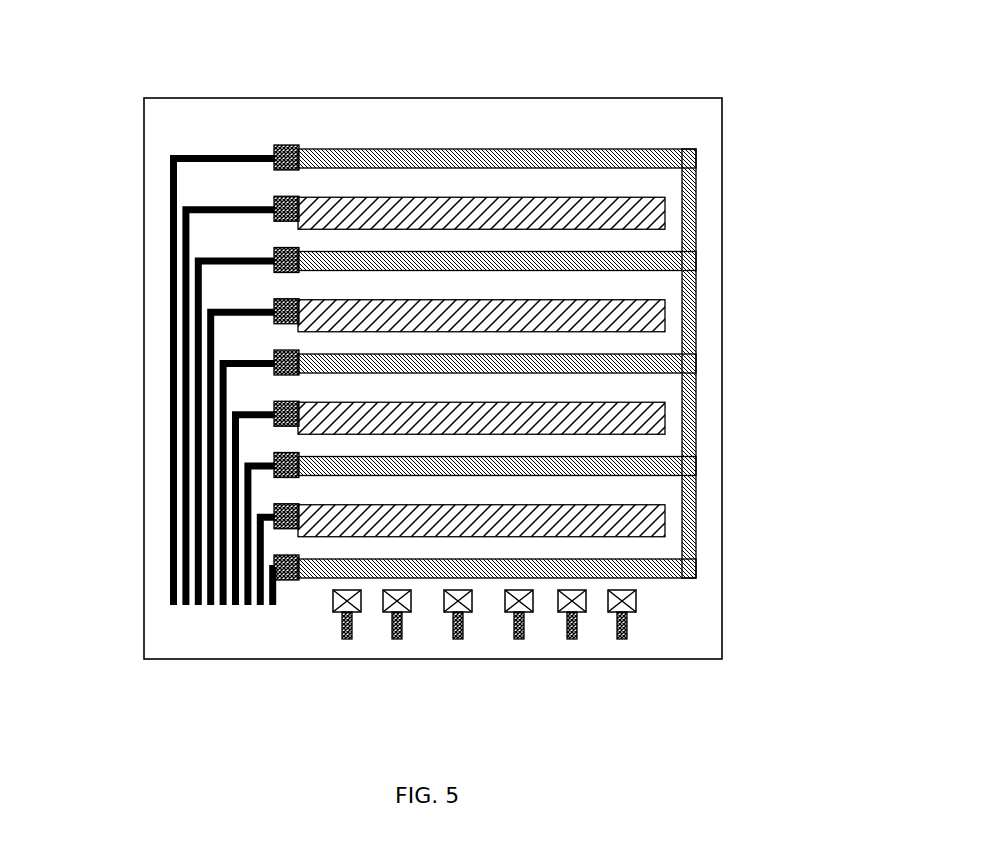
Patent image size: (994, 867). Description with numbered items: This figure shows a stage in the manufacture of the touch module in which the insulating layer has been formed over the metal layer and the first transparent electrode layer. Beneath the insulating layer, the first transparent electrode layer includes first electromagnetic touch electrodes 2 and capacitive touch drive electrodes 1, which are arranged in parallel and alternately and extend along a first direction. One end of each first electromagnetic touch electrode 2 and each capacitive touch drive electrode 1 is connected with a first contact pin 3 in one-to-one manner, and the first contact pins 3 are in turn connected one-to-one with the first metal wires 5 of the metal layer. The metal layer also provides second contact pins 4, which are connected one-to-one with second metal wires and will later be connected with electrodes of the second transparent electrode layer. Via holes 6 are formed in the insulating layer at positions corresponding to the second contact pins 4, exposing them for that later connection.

The capacitive touch drive electrode 1 is at (597, 197).
The first electromagnetic touch electrode 2 is at (652, 323).
The first contact pin 3 is at (277, 143).
The second contact pin 4 is at (343, 637).
The first metal wire 5 is at (208, 368).
The via hole 6 is at (631, 611).